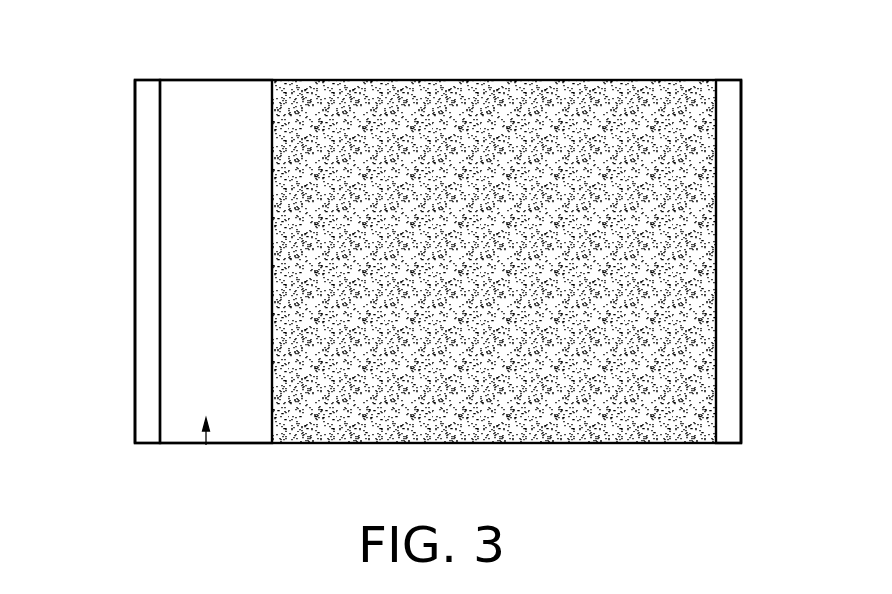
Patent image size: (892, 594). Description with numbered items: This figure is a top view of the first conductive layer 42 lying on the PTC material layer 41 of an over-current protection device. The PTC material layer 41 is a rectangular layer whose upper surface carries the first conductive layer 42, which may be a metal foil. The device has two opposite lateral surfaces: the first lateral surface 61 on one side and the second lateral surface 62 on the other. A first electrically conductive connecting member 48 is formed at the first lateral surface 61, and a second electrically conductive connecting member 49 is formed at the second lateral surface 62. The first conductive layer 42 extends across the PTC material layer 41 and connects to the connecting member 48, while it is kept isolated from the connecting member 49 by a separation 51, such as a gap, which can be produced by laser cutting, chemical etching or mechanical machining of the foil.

The PTC material layer 41 is at (216, 95).
The first conductive layer 42 is at (487, 95).
The first electrically conductive connecting member 48 is at (730, 218).
The second electrically conductive connecting member 49 is at (146, 219).
The separation 51 is at (206, 445).
The first lateral surface 61 is at (741, 289).
The second lateral surface 62 is at (135, 288).